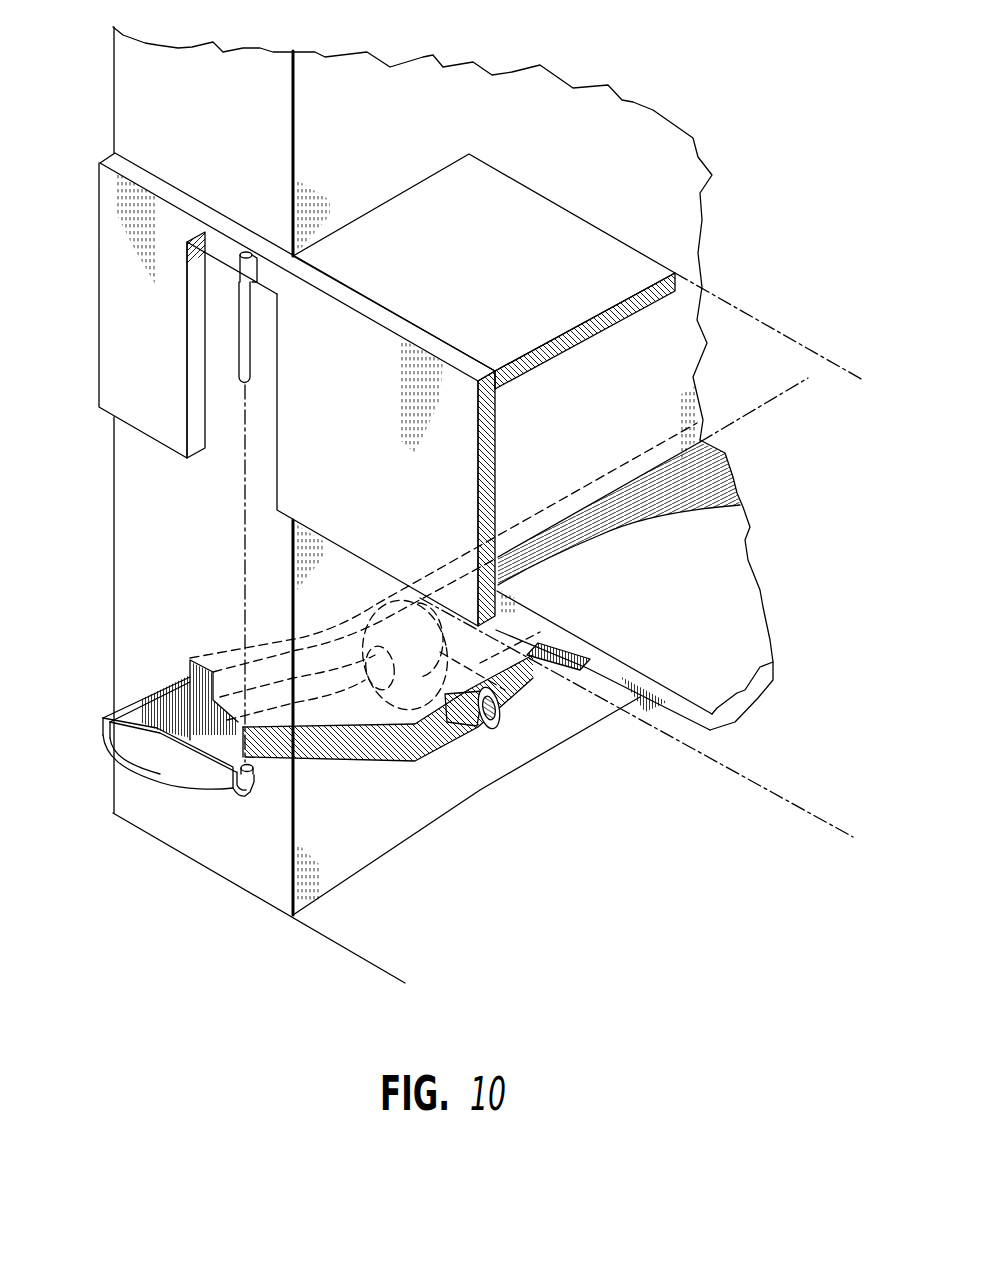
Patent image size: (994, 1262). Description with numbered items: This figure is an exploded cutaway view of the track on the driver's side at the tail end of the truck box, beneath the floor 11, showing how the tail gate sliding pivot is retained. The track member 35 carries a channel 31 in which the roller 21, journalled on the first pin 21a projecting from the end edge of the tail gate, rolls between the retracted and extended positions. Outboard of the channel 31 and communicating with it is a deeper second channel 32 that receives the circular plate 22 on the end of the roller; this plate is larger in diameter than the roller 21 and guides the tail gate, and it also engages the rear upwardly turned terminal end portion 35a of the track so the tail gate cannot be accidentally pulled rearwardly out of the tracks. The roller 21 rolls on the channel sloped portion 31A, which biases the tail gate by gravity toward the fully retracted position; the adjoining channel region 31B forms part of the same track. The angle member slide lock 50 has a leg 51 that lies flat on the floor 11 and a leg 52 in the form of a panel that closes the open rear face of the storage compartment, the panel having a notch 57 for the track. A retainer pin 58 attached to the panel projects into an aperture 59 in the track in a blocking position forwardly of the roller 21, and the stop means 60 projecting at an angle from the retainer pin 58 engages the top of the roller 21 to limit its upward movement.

The floor 11 is at (724, 614).
The roller 21 is at (529, 767).
The first pin 21a is at (490, 718).
The circular plate 22 is at (392, 700).
The channel 31 is at (451, 799).
The channel sloped portion 31A is at (363, 772).
The second guide rail portion 31B is at (529, 677).
The second channel 32 is at (214, 717).
The track member 35 is at (149, 778).
The rear upwardly turned terminal end portion 35a is at (103, 742).
The angle member slide lock 50 is at (478, 342).
The leg 51 is at (508, 271).
The leg 52 is at (346, 464).
The notch 57 is at (190, 321).
The retainer pin 58 is at (216, 304).
The aperture 59 is at (253, 777).
The stop means 60 is at (237, 287).